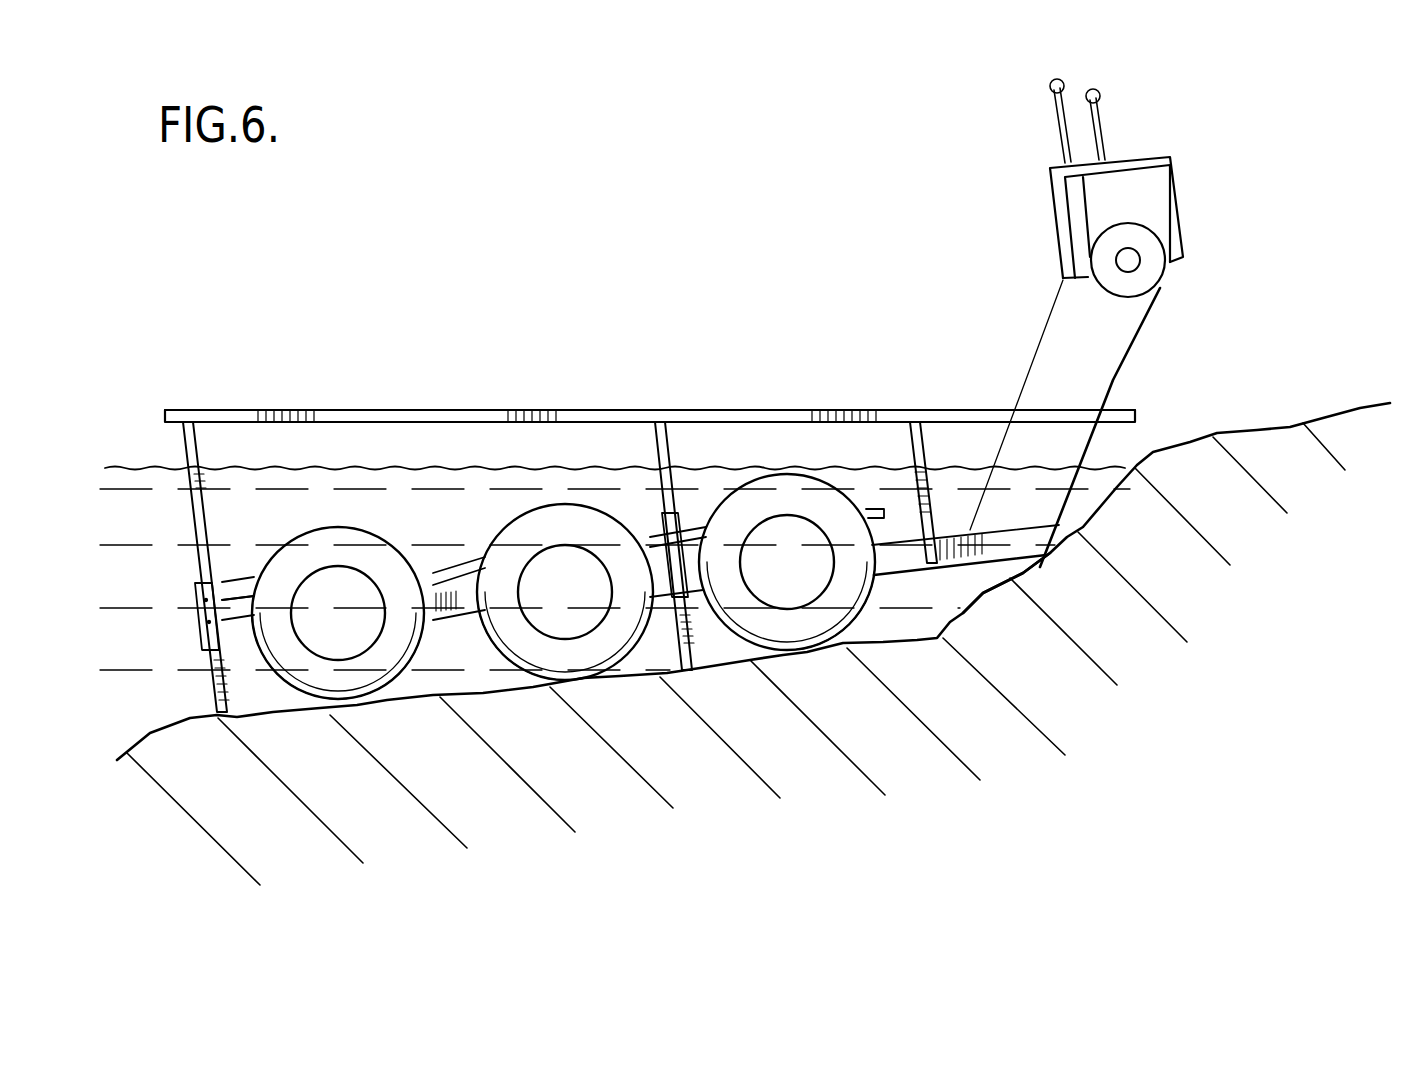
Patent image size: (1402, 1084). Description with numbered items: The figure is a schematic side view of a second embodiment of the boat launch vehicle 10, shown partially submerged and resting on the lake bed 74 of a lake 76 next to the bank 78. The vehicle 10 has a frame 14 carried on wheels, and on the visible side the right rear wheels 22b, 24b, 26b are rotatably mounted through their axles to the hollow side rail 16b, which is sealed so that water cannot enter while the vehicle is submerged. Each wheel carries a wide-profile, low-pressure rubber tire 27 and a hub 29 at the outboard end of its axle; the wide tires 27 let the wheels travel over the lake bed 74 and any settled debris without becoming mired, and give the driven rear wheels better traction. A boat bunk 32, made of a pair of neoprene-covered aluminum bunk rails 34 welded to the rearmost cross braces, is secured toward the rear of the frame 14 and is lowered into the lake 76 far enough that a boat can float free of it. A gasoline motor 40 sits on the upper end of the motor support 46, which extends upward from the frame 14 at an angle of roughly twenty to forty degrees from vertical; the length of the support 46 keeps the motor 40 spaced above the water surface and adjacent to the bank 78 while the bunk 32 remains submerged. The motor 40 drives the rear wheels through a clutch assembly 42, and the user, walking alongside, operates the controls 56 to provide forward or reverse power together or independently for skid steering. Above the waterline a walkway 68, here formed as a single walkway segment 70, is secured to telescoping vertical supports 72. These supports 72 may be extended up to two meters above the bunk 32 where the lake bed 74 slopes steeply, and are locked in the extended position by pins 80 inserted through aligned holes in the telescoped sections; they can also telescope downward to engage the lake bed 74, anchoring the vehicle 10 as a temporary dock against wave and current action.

The boat launch vehicle 10 is at (716, 332).
The frame 14 is at (999, 555).
The side rail 16b is at (467, 652).
The right rear wheel 22b is at (803, 633).
The right rear wheel 24b is at (600, 687).
The right rear wheel 26b is at (363, 687).
The rubber tire 27 is at (353, 568).
The hub 29 is at (356, 636).
The boat bunk 32 is at (468, 534).
The bunk rail 34 is at (243, 580).
The motor 40 is at (1160, 193).
The clutch assembly 42 is at (1153, 273).
The motor support 46 is at (1077, 317).
The controls 56 is at (1067, 108).
The walkway 68 is at (463, 400).
The walkway segment 70 is at (740, 409).
The telescoping support 72 is at (200, 543).
The lake bed 74 is at (915, 645).
The lake 76 is at (372, 514).
The bank 78 is at (1240, 430).
The pin 80 is at (185, 492).